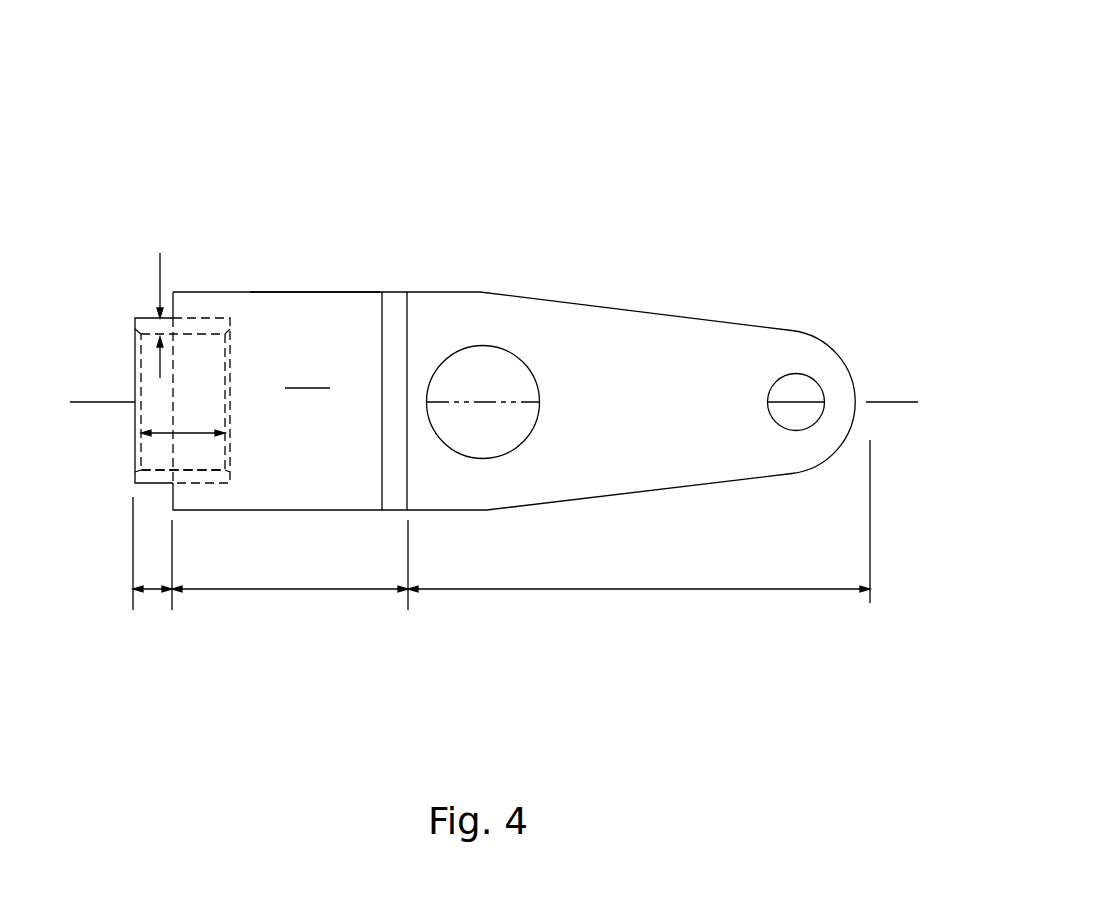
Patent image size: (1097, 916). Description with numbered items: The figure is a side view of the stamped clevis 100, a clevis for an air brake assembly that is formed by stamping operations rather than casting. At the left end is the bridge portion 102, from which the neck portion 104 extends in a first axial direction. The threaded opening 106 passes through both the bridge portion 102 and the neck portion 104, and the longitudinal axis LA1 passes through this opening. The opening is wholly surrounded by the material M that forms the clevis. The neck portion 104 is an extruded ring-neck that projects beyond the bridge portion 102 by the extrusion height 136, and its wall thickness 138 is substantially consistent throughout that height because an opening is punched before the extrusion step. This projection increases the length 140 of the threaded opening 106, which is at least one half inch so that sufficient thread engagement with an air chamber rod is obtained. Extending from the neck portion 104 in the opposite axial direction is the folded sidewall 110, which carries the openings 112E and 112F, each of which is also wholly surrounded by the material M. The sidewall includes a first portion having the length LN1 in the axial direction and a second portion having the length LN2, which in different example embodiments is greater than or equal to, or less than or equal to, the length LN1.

The stamped clevis 100 is at (692, 96).
The bridge portion 102 is at (202, 292).
The neck portion 104 is at (143, 308).
The threaded opening 106 is at (163, 470).
The folded sidewall 110 is at (312, 284).
The opening 112E is at (483, 346).
The opening 112F is at (788, 373).
The extrusion height 136 is at (152, 592).
The thickness 138 is at (162, 263).
The length 140 is at (185, 433).
The length LN1 is at (322, 590).
The length LN2 is at (631, 588).
The longitudinal axis LA1 is at (897, 403).
The material M is at (307, 375).